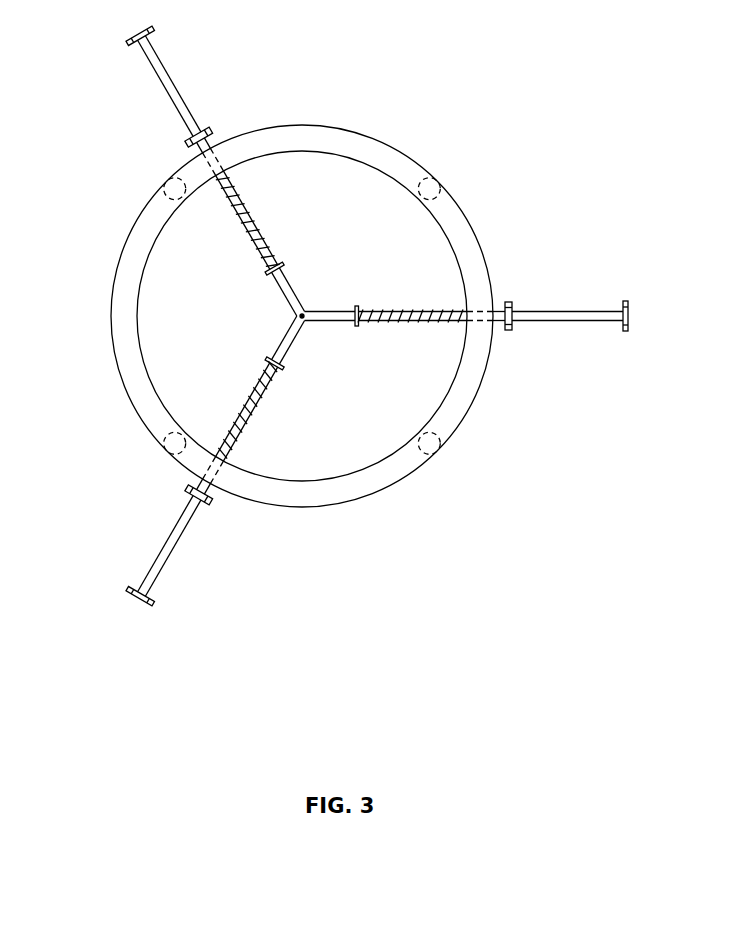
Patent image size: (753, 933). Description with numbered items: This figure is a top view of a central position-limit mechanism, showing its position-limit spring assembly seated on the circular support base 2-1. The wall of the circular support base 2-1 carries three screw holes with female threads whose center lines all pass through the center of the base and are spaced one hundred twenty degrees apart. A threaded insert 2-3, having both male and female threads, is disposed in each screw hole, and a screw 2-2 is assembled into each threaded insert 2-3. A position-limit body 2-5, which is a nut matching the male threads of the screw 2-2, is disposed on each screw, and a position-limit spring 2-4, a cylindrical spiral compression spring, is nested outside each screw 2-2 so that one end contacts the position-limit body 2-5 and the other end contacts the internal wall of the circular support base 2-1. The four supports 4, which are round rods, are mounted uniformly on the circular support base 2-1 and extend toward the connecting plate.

The circular support base 2-1 is at (123, 280).
The screw 2-2 is at (567, 317).
The threaded insert 2-3 is at (508, 303).
The position-limit spring 2-4 is at (450, 322).
The position-limit body 2-5 is at (357, 322).
The support 4 is at (430, 188).